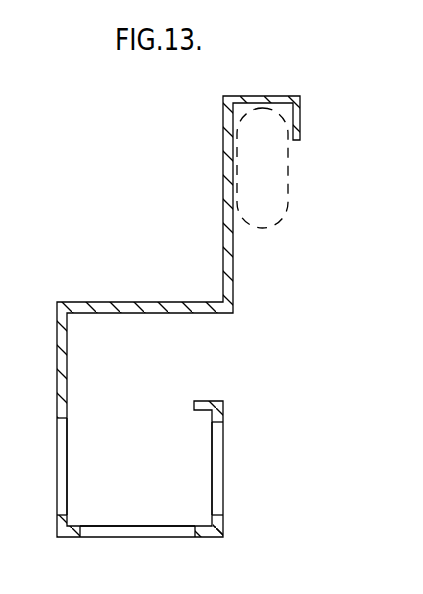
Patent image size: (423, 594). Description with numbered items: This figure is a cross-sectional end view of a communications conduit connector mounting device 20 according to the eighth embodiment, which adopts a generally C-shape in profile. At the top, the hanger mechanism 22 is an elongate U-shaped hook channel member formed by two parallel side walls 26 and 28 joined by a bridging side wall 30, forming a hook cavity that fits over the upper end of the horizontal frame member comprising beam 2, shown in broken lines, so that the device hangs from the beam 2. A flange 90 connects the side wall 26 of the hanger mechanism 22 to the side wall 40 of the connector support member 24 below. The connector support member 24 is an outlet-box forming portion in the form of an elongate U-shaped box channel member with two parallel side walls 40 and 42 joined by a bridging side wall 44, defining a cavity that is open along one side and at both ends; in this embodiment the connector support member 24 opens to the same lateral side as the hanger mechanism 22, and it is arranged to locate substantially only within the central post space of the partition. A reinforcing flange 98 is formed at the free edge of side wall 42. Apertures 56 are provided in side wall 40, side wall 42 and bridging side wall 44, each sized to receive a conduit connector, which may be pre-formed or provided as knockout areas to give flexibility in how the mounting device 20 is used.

The beam 2 is at (283, 170).
The mounting device 20 is at (130, 200).
The hanger mechanism 22 is at (218, 128).
The connector support member 24 is at (50, 463).
The side wall 26 is at (223, 220).
The side wall 28 is at (301, 115).
The bridging side wall 30 is at (265, 96).
The side wall 40 is at (57, 352).
The side wall 42 is at (240, 402).
The bridging side wall 44 is at (201, 537).
The aperture 56 is at (62, 453).
The flange 90 is at (167, 302).
The reinforcing flange 98 is at (201, 401).